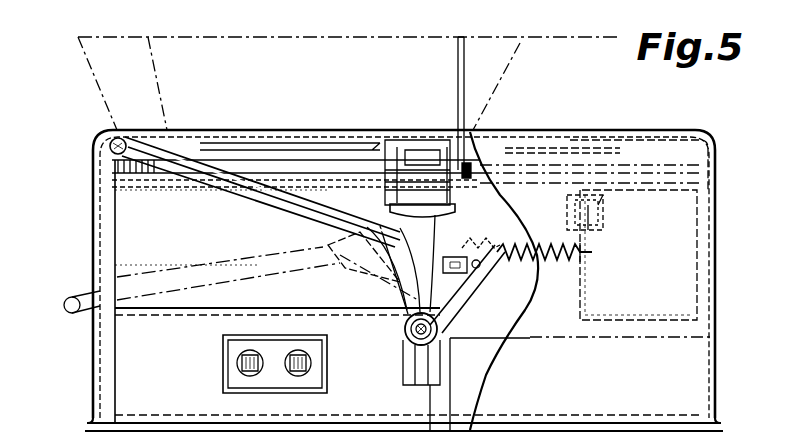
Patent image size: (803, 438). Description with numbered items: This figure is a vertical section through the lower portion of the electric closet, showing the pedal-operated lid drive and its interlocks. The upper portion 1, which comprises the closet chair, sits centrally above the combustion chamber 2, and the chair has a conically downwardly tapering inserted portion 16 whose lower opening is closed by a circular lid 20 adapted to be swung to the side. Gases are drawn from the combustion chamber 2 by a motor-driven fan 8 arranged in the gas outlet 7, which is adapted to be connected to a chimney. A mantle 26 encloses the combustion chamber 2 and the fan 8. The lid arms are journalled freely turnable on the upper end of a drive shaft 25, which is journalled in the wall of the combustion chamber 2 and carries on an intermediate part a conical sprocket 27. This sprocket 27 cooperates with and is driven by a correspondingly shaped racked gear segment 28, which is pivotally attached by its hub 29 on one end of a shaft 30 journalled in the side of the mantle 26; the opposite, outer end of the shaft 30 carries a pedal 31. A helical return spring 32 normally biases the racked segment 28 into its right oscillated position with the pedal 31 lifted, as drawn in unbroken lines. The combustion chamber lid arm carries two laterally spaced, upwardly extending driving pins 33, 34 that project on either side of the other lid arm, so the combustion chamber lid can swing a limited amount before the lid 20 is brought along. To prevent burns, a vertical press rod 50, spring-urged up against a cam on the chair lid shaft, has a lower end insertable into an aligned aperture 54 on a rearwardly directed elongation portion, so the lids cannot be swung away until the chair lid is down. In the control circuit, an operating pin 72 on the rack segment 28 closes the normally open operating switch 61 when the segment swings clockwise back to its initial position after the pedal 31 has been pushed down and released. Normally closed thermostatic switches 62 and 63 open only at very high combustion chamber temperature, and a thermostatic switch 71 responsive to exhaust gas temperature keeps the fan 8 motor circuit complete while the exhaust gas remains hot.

The upper portion 1 is at (520, 43).
The combustion chamber 2 is at (128, 212).
The gas outlet 7 is at (692, 326).
The fan 8 is at (683, 238).
The inserted portion 16 is at (158, 67).
The lid 20 is at (272, 137).
The drive shaft 25 is at (408, 137).
The mantle 26 is at (705, 134).
The conical sprocket 27 is at (455, 216).
The racked gear segment 28 is at (452, 300).
The hub 29 is at (432, 342).
The shaft 30 is at (413, 337).
The pedal 31 is at (110, 135).
The helical return spring 32 is at (548, 262).
The driving pin 33 is at (338, 208).
The driving pin 34 is at (473, 134).
The press rod 50 is at (465, 45).
The aperture 54 is at (530, 133).
The operating switch 61 is at (455, 276).
The thermostatic switch 62 is at (225, 388).
The thermostatic switch 63 is at (307, 370).
The thermostatic switch 71 is at (603, 229).
The operating pin 72 is at (485, 263).